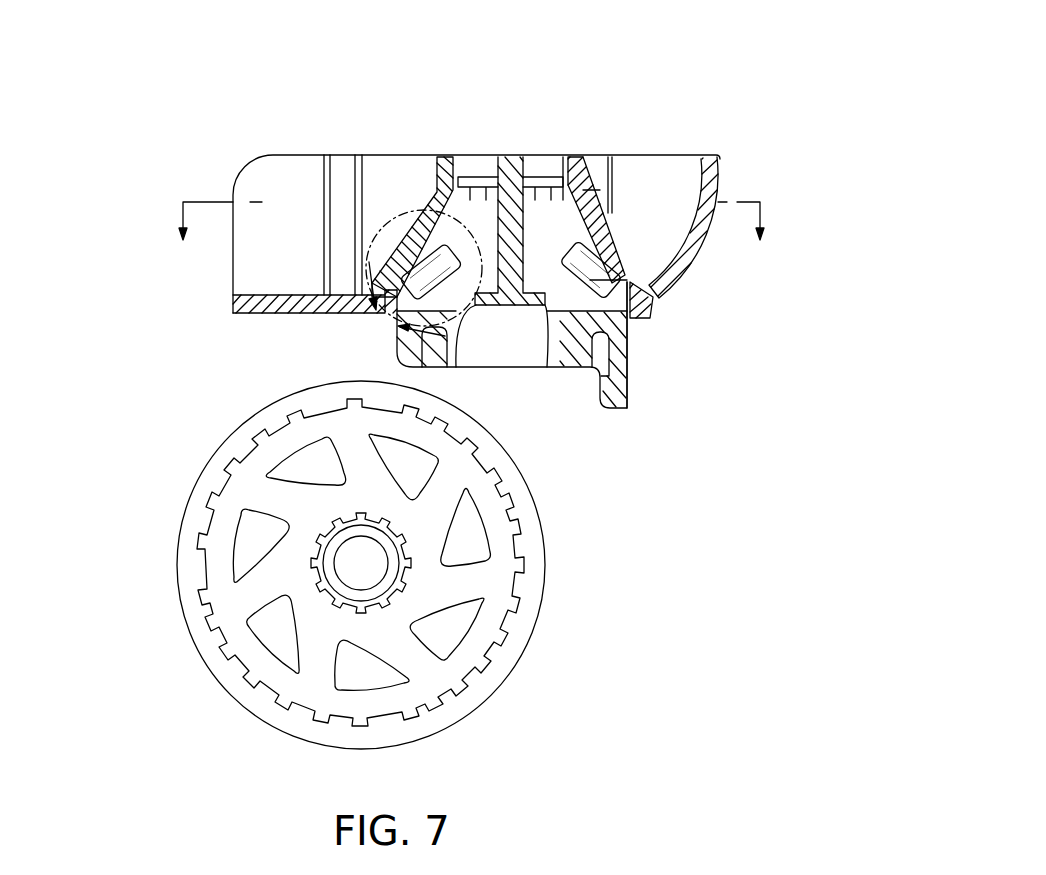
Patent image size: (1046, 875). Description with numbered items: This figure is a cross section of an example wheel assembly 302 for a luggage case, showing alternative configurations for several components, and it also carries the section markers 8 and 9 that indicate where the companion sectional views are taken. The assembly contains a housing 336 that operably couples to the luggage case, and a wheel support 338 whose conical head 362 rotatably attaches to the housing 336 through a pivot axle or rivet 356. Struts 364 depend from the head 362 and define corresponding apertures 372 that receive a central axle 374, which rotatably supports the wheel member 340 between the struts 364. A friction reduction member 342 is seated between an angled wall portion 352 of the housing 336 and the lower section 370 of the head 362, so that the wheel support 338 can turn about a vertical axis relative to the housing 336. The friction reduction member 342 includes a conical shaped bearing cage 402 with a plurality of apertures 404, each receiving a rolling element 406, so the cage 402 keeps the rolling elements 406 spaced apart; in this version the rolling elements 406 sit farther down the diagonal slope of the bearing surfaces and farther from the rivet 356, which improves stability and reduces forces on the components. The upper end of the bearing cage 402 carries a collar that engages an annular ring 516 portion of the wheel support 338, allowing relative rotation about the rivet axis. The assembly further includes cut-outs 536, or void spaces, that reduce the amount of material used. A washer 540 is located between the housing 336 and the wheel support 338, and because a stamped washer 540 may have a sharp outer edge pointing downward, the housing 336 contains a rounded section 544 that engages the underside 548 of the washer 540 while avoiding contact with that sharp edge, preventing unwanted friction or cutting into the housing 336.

The wheel assembly 302 is at (718, 68).
The housing 336 is at (400, 180).
The wheel support 338 is at (408, 358).
The wheel member 340 is at (250, 442).
The friction reduction member 342 is at (613, 240).
The angled wall portion 352 is at (398, 224).
The pivot axle or rivet 356 is at (518, 165).
The conical head 362 is at (556, 176).
The struts 364 is at (543, 458).
The lower section 370 is at (627, 326).
The apertures 372 is at (375, 568).
The central axle 374 is at (353, 552).
The bearing cage 402 is at (425, 212).
The apertures 404 is at (410, 260).
The rolling elements 406 is at (650, 278).
The annular ring 516 is at (487, 188).
The cut-outs 536 is at (551, 333).
The washer 540 is at (548, 200).
The rounded section 544 is at (608, 190).
The underside 548 is at (604, 250).
The section line 8- 8 is at (399, 309).
The section line 9- 9 is at (472, 215).